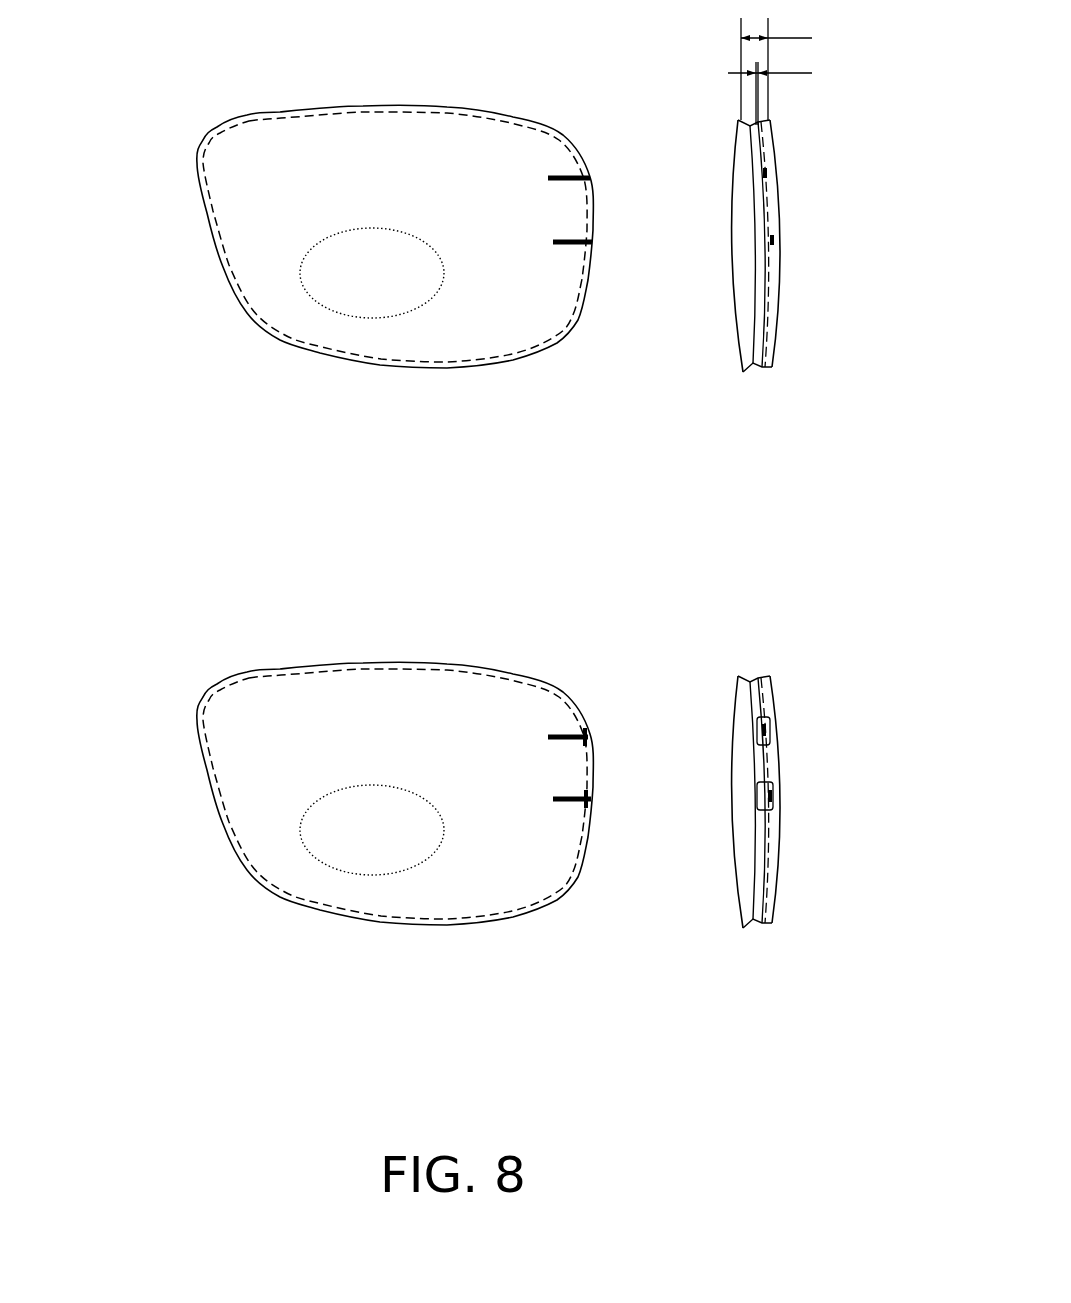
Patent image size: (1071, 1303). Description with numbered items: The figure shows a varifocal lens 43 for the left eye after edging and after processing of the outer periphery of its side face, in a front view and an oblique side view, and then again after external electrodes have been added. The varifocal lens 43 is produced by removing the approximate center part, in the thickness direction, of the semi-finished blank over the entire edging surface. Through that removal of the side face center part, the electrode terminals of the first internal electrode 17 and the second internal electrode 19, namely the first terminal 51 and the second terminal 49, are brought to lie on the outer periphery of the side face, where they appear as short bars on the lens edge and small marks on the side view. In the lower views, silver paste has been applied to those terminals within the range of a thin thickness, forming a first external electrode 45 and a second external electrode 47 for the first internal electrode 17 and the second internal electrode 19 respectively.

The varifocal lens 43 is at (238, 632).
The first internal electrode 17 is at (570, 200).
The second internal electrode 19 is at (570, 200).
The second terminal 49 is at (758, 158).
The first terminal 51 is at (763, 243).
The second external electrode 47 is at (762, 720).
The first external electrode 45 is at (762, 802).